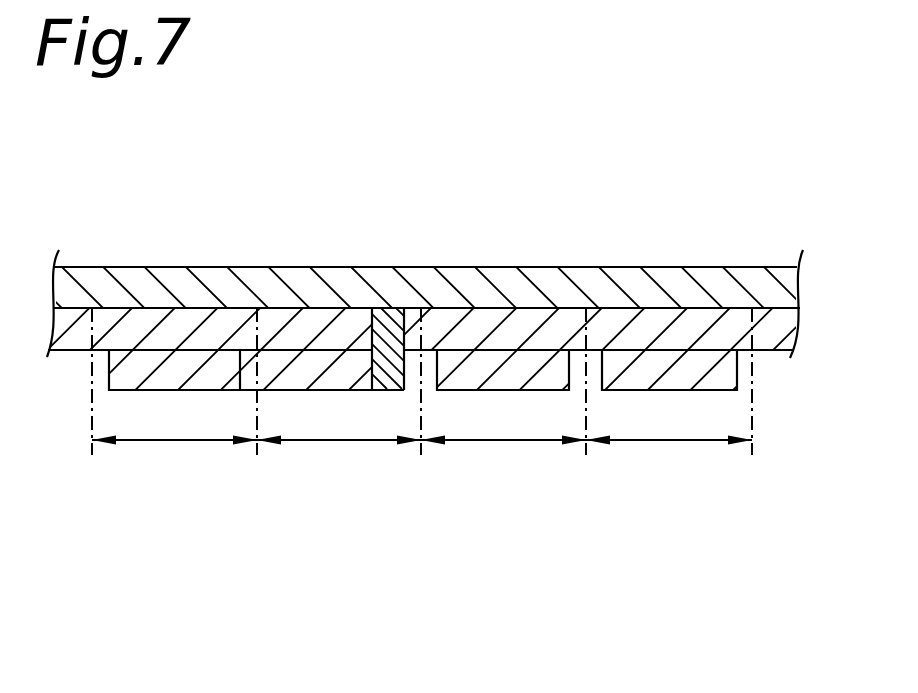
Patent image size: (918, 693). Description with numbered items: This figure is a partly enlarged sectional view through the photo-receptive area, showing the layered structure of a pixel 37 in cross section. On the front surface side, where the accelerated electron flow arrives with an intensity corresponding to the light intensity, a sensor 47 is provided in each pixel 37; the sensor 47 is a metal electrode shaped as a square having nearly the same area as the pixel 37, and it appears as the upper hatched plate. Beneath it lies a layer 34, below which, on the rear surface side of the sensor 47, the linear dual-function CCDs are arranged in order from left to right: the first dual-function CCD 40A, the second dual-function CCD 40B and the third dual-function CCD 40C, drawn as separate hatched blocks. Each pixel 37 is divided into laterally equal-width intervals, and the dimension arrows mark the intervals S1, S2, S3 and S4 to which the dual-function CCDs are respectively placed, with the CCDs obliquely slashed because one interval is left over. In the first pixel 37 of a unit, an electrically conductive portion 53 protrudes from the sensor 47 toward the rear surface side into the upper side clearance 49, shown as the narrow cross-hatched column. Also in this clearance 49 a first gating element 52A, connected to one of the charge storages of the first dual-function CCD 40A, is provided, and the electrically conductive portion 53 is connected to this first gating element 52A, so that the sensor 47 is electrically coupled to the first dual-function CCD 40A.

The pixel 37 is at (431, 342).
The sensor 47 is at (365, 267).
The intermediate layer 34 is at (540, 320).
The electrically conductive portion 53 is at (412, 327).
The first dual-function CCD 40A is at (183, 348).
The first gating element 52A is at (298, 390).
The clearance 49 is at (389, 410).
The second dual-function CCD 40B is at (543, 390).
The third dual-function CCD 40C is at (727, 392).
The interval S1 is at (174, 459).
The interval S2 is at (339, 459).
The interval S3 is at (503, 459).
The interval S4 is at (669, 459).